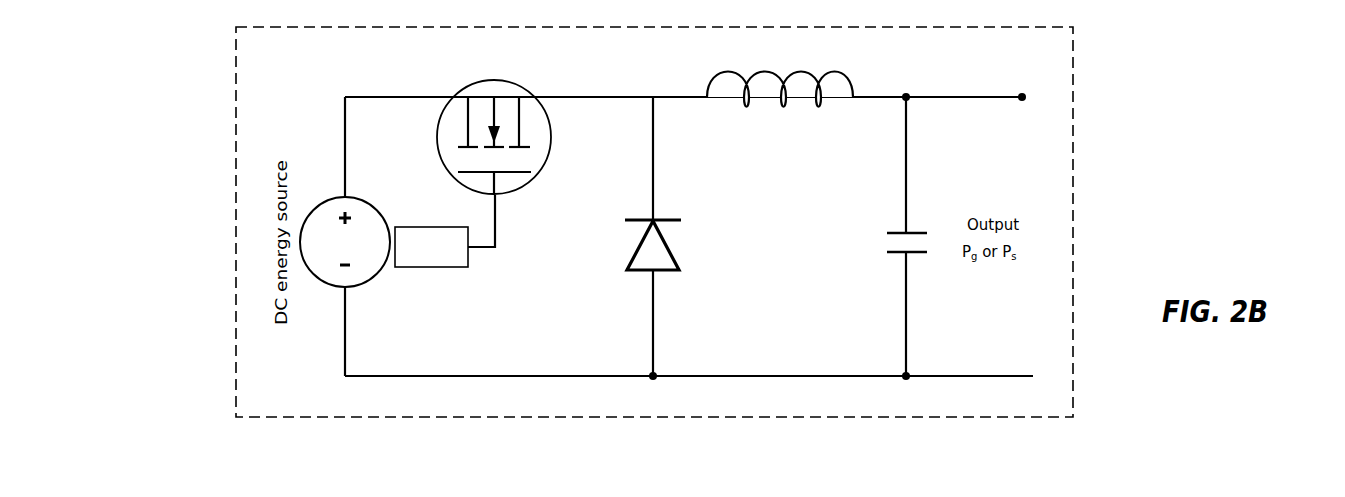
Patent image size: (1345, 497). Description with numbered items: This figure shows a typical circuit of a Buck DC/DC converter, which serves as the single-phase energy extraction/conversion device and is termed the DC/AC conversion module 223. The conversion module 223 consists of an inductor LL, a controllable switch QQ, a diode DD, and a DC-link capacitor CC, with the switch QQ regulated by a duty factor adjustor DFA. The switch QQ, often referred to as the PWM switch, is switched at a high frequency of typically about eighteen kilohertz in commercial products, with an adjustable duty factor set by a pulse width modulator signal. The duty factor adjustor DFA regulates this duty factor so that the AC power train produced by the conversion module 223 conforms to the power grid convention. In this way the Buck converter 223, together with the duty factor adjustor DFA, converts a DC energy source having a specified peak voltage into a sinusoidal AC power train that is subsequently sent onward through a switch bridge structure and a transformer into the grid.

The DC/AC conversion module 223 is at (665, 57).
The controllable switch QQ is at (545, 162).
The diode DD is at (640, 237).
The inductor LL is at (764, 110).
The DC-link capacitor CC is at (884, 243).
The duty factor adjustor DFA is at (445, 231).